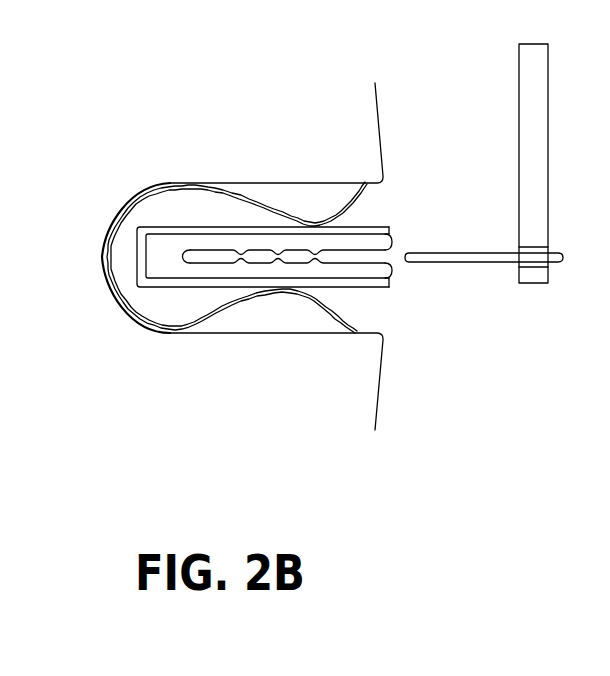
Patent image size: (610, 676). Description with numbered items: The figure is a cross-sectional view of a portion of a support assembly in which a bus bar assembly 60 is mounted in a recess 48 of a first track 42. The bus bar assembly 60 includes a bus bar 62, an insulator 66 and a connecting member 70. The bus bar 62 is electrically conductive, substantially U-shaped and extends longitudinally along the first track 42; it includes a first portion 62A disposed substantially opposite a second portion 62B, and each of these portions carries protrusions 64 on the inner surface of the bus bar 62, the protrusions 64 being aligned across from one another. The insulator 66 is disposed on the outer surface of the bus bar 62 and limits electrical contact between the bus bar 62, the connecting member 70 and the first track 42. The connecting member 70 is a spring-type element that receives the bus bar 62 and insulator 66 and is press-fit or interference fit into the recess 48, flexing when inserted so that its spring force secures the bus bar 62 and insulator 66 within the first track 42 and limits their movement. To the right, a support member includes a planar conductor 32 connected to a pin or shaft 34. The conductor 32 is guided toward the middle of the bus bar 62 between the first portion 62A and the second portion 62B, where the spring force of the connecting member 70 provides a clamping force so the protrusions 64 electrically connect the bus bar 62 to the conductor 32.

The conductor 32 is at (490, 258).
The pin/shaft 34 is at (552, 122).
The first track 42 is at (370, 112).
The recess 48 is at (252, 333).
The bus bar assembly 60 is at (136, 173).
The bus bar 62 is at (394, 278).
The first portion 62A is at (372, 242).
The second portion 62B is at (373, 272).
The protrusions 64 is at (313, 245).
The insulator 66 is at (384, 220).
The connecting member 70 is at (316, 200).